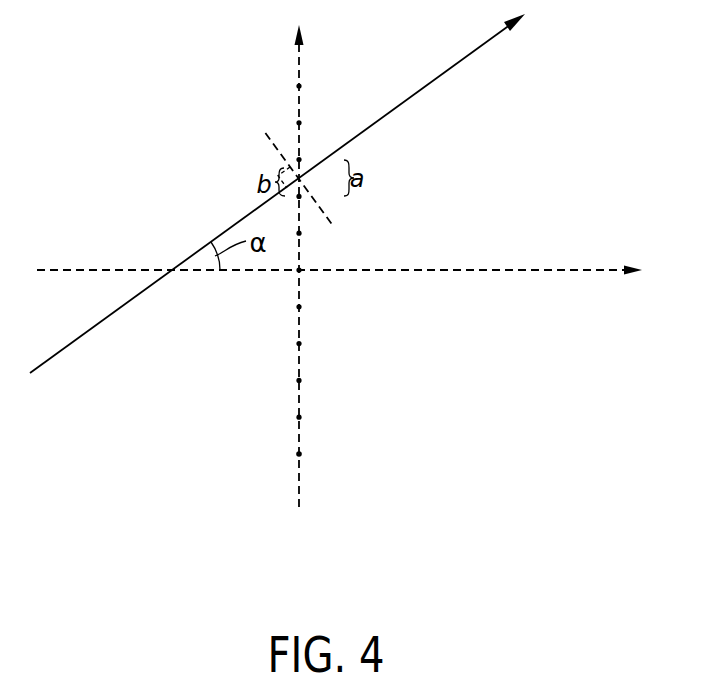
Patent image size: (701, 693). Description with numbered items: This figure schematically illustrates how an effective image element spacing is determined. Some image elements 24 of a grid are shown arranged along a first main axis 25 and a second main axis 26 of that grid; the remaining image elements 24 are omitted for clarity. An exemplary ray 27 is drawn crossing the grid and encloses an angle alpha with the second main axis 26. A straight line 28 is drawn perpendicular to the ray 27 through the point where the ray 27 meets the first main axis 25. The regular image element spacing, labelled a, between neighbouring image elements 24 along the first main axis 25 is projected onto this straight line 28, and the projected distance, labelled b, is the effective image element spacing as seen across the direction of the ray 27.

The image element 24 is at (312, 443).
The first main axis 25 is at (299, 472).
The second main axis 26 is at (558, 270).
The ray 27 is at (442, 75).
The straight line 28 is at (327, 217).